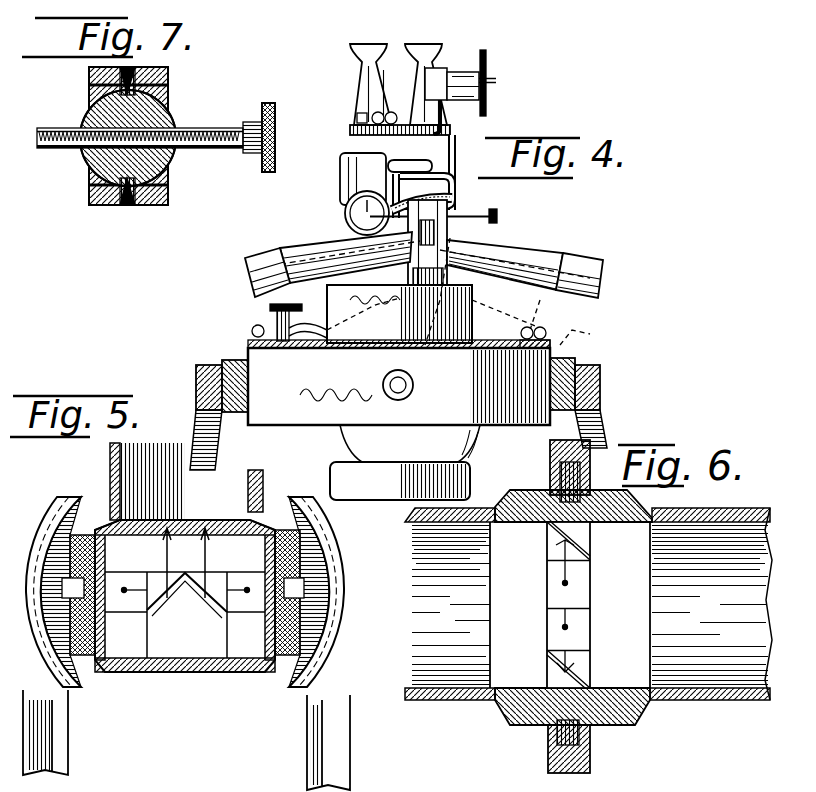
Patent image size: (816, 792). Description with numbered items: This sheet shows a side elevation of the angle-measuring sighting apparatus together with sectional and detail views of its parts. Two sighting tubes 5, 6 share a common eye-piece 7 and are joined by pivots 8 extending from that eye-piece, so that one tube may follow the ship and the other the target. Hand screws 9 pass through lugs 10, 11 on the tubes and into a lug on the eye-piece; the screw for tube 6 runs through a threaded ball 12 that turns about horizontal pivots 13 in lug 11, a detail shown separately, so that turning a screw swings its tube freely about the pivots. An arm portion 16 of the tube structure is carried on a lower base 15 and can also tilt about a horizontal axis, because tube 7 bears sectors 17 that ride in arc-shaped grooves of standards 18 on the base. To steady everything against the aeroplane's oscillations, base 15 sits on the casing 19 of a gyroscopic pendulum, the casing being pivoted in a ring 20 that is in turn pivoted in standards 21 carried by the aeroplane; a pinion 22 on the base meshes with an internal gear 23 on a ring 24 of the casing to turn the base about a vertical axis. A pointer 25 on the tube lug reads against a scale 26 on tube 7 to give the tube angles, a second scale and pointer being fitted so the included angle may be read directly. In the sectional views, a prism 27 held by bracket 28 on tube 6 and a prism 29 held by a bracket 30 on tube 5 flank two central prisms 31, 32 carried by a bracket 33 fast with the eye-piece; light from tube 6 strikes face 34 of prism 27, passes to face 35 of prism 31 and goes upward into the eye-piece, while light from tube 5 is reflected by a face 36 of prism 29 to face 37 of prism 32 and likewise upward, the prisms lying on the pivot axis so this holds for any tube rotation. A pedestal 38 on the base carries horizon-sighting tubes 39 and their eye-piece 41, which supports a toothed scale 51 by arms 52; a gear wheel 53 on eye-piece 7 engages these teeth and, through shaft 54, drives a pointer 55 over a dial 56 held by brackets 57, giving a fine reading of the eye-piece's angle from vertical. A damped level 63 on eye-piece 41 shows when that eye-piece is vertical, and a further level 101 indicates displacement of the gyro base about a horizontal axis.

In FIG. 4, the sighting tube 5 is at (267, 272).
In FIG. 5, the sighting tube 5 is at (272, 666).
In FIG. 6, the sighting tube 5 is at (636, 494).
In FIG. 4, the sighting tube 6 is at (521, 269).
In FIG. 5, the sighting tube 6 is at (176, 593).
In FIG. 6, the sighting tube 6 is at (492, 736).
In FIG. 4, the eye-piece 7 is at (432, 46).
In FIG. 5, the eye-piece 7 is at (192, 668).
In FIG. 6, the eye-piece 7 is at (622, 522).
In FIG. 5, the pivots 8 is at (66, 588).
In FIG. 6, the pivots 8 is at (582, 478).
In FIG. 7, the hand screw 9 is at (58, 130).
In FIG. 4, the hand screw 9 is at (355, 214).
In FIG. 4, the lug 10 is at (408, 240).
In FIG. 7, the lug 11 is at (89, 196).
In FIG. 4, the lug 11 is at (447, 240).
In FIG. 7, the ball 12 is at (165, 116).
In FIG. 7, the horizontal pivots 13 is at (135, 72).
In FIG. 4, the lower base 15 is at (480, 300).
In FIG. 4, the arm 16 is at (345, 257).
In FIG. 5, the sectors 17 is at (110, 512).
In FIG. 6, the sectors 17 is at (550, 470).
In FIG. 4, the standards 18 is at (412, 276).
In FIG. 5, the standards 18 is at (45, 524).
In FIG. 6, the standards 18 is at (550, 446).
In FIG. 4, the gyroscope casing 19 is at (399, 424).
In FIG. 4, the ring 20 is at (248, 342).
In FIG. 4, the standards 21 is at (218, 445).
In FIG. 4, the pinion 22 is at (280, 320).
In FIG. 4, the internal gear 23 is at (500, 342).
In FIG. 4, the ring 24 is at (553, 337).
In FIG. 4, the pointer 25 is at (455, 196).
In FIG. 4, the scale 26 is at (452, 172).
In FIG. 5, the prism 27 is at (135, 598).
In FIG. 6, the prism 27 is at (558, 656).
In FIG. 5, the bracket 28 is at (185, 605).
In FIG. 6, the bracket 28 is at (590, 676).
In FIG. 5, the prism 29 is at (240, 598).
In FIG. 6, the prism 29 is at (547, 566).
In FIG. 5, the cell 30 is at (241, 557).
In FIG. 6, the cell 30 is at (547, 542).
In FIG. 5, the prism 31 is at (160, 563).
In FIG. 6, the prism 31 is at (580, 620).
In FIG. 5, the prism 32 is at (196, 563).
In FIG. 6, the prism 32 is at (555, 594).
In FIG. 5, the bracket 33 is at (150, 638).
In FIG. 6, the bracket 33 is at (590, 586).
In FIG. 6, the face of prism 27 34 is at (565, 672).
In FIG. 5, the face of prism 31 35 is at (187, 597).
In FIG. 6, the chamber 36 is at (590, 548).
In FIG. 5, the face of prism 32 37 is at (205, 619).
In FIG. 4, the pedestal 38 is at (340, 176).
In FIG. 4, the sighting tube 39 is at (367, 206).
In FIG. 4, the eye-piece 41 is at (360, 78).
In FIG. 4, the scale 51 is at (444, 118).
In FIG. 4, the arms 52 is at (394, 114).
In FIG. 4, the gear wheel 53 is at (463, 86).
In FIG. 4, the shaft 54 is at (462, 93).
In FIG. 4, the pointer 55 is at (496, 80).
In FIG. 4, the dial 56 is at (486, 55).
In FIG. 4, the brackets 57 is at (448, 74).
In FIG. 4, the level 63 is at (373, 113).
In FIG. 4, the level 101 is at (252, 327).